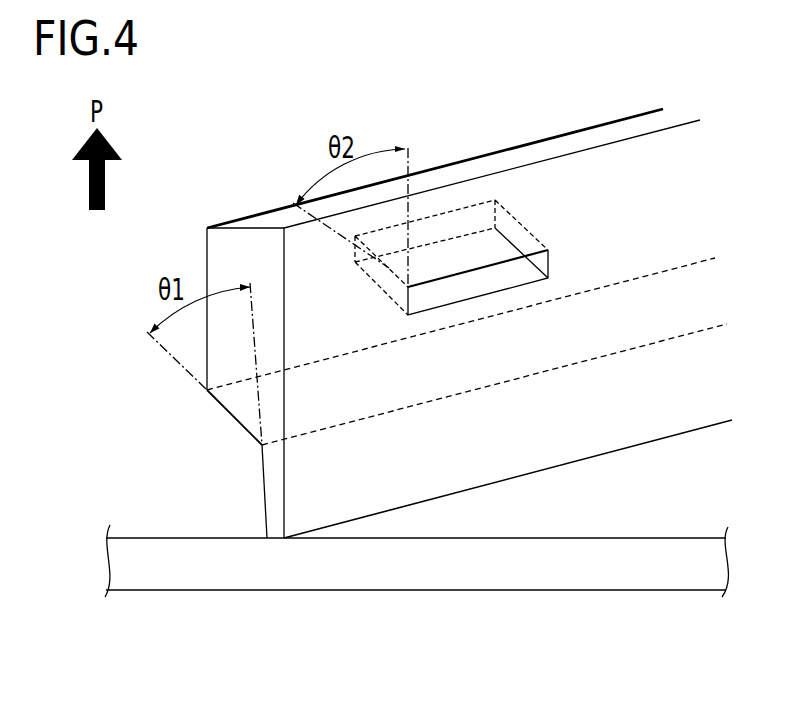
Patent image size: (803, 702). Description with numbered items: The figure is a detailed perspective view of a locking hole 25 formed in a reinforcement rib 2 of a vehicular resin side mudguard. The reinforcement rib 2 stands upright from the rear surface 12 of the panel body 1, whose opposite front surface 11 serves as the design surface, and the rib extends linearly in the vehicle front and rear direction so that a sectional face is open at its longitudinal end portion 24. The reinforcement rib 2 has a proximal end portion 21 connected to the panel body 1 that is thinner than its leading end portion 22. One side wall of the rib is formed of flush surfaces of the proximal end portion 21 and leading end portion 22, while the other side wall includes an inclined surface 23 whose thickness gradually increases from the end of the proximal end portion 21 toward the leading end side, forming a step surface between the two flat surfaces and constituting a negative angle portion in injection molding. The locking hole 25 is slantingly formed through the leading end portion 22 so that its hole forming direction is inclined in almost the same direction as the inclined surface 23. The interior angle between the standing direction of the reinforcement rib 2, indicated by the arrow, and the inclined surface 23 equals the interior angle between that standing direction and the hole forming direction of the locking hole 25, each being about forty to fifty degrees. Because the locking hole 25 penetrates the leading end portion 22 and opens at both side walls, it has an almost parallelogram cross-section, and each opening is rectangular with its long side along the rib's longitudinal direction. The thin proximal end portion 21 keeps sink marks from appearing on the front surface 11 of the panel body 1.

The panel body 1 is at (416, 580).
The front surface 11 is at (447, 590).
The rear surface 12 is at (513, 512).
The reinforcement rib 2 is at (430, 284).
The proximal end portion 21 is at (635, 425).
The leading end portion 22 is at (643, 195).
The inclined surface 23 is at (230, 420).
The longitudinal end portion 24 is at (222, 253).
The locking hole 25 is at (470, 297).